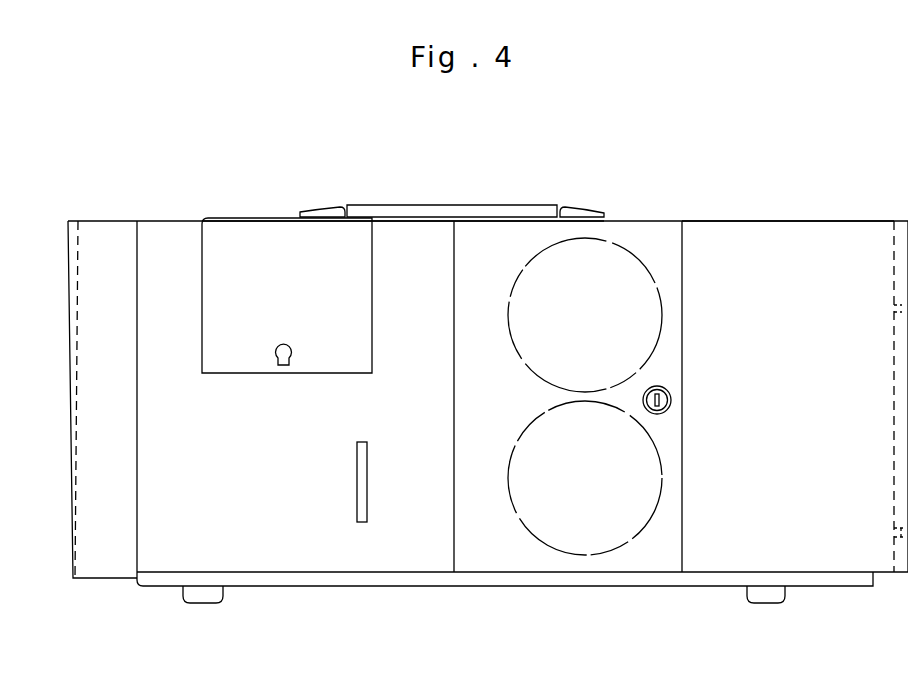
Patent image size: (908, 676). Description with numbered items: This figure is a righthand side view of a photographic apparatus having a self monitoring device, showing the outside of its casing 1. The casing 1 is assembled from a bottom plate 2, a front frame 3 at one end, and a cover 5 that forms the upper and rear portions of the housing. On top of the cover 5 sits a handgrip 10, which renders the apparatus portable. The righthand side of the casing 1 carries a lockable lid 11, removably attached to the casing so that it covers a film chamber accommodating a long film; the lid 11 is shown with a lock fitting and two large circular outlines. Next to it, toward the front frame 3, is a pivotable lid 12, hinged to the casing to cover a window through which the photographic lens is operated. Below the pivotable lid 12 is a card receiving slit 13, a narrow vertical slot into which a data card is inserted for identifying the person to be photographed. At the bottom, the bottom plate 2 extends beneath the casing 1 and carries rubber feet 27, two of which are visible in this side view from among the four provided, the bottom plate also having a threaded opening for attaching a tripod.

The casing 1 is at (808, 198).
The bottom plate 2 is at (495, 582).
The front frame 3 is at (104, 228).
The cover 5 is at (734, 236).
The handgrip 10 is at (437, 206).
The lockable lid 11 is at (634, 228).
The pivotable lid 12 is at (266, 238).
The card receiving slit 13 is at (362, 524).
The rubber feet 27 is at (208, 598).